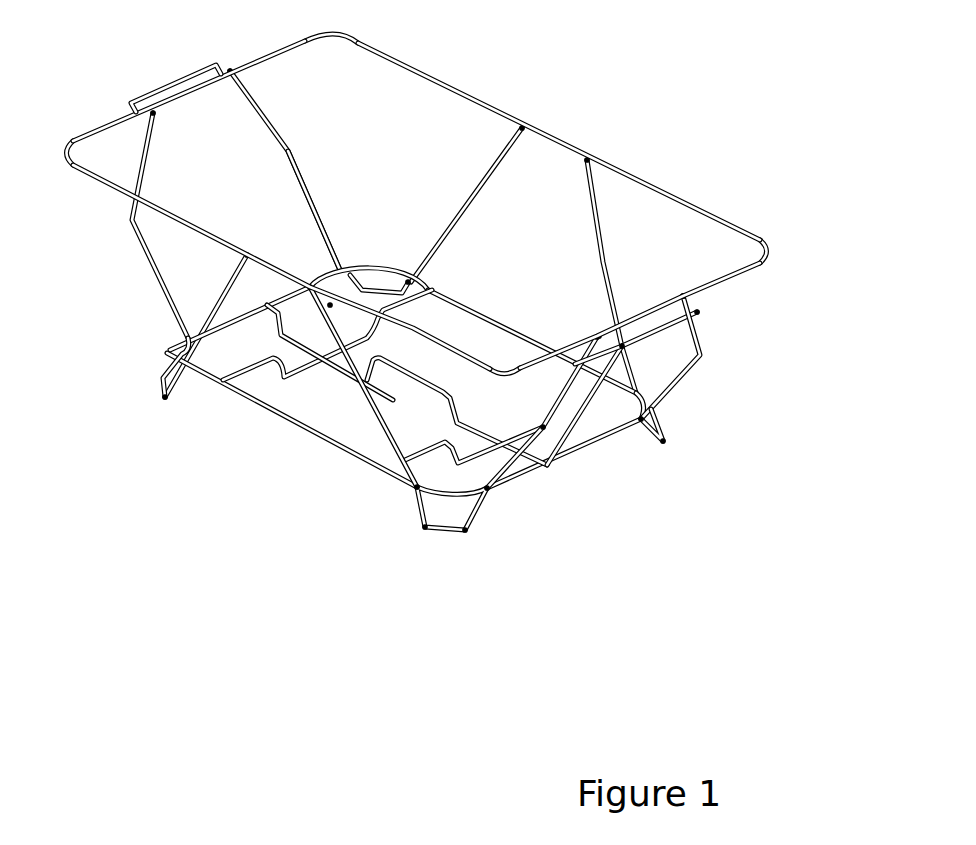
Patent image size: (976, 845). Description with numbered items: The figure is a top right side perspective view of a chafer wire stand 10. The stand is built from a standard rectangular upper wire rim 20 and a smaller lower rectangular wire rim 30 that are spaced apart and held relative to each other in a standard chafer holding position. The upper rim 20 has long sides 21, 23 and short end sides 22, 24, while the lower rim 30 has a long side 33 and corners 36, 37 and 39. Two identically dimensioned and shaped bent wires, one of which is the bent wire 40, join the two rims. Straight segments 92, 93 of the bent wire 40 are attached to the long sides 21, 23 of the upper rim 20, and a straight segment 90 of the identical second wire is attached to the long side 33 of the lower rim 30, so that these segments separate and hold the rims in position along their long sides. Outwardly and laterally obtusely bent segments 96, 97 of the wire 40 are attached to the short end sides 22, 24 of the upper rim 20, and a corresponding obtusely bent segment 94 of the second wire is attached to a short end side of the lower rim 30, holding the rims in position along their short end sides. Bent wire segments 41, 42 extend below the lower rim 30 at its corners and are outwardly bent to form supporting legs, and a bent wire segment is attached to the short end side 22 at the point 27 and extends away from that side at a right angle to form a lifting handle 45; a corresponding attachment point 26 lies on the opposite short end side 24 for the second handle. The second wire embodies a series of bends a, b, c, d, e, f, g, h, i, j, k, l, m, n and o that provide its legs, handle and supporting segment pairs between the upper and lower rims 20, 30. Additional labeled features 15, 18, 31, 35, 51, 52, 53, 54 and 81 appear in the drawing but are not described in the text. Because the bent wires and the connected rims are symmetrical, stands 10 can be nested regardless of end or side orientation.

The chafer wire stand 10 is at (818, 197).
The junction 15 is at (598, 335).
The leg junction 18 is at (230, 68).
The upper wire rim 20 is at (433, 189).
The long side 21 is at (452, 88).
The short end side 22 is at (284, 40).
The long side 23 is at (96, 174).
The short end side 24 is at (753, 268).
The attachment point 26 is at (683, 294).
The attachment point 27 is at (157, 114).
The lower wire rim 30 is at (405, 383).
The junction 31 is at (393, 271).
The long side 33 is at (281, 412).
The rear side of bottom frame 35 is at (470, 304).
The lower rim corner 36 is at (172, 363).
The lower rim corner 37 is at (362, 265).
The lower rim corner 39 is at (440, 494).
The bent wire 40 is at (291, 152).
The bent wire segment 41 is at (381, 284).
The bent wire segment 42 is at (163, 397).
The lifting handle 45 is at (168, 88).
The leg junction 51 is at (590, 161).
The leg junction 52 is at (524, 128).
The leg junction 53 is at (244, 256).
The junction 54 is at (310, 291).
The leg 81 is at (600, 256).
The straight segment 90 is at (384, 426).
The straight segment 92 is at (460, 221).
The straight segment 93 is at (225, 296).
The obtusely bent wire segment 94 is at (548, 401).
The obtusely bent wire segment 96 is at (317, 212).
The obtusely bent wire segment 97 is at (151, 279).
The bend a is at (326, 297).
The bend b is at (415, 488).
The bend c is at (423, 531).
The bend d is at (465, 533).
The bend e is at (490, 490).
The bend f is at (546, 428).
The bend g is at (595, 337).
The bend h is at (625, 348).
The bend i is at (700, 313).
The bend j is at (686, 293).
The bend k is at (703, 356).
The bend l is at (638, 424).
The bend m is at (664, 444).
The bend n is at (659, 422).
The bend o is at (636, 403).